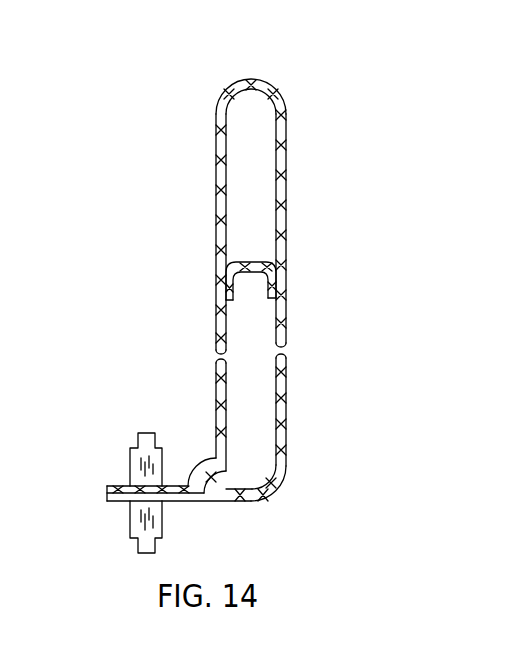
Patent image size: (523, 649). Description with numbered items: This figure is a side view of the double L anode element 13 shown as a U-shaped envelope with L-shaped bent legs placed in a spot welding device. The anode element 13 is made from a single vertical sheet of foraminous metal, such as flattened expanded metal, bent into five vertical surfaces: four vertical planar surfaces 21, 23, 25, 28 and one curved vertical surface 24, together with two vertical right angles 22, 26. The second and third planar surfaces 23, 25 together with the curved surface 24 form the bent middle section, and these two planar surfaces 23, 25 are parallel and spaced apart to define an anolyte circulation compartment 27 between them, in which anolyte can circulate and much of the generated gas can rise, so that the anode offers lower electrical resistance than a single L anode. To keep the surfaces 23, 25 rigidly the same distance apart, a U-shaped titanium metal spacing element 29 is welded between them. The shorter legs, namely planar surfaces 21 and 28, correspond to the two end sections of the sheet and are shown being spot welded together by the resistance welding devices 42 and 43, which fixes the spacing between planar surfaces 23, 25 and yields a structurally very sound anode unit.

The double L anode element 13 is at (234, 52).
The first vertical planar surface 21 is at (118, 507).
The vertical right angle 22 is at (273, 494).
The second vertical planar surface 23 is at (287, 392).
The curved vertical surface 24 is at (250, 79).
The third vertical planar surface 25 is at (217, 183).
The vertical right angle 26 is at (212, 470).
The anolyte circulation compartment 27 is at (252, 337).
The fourth vertical planar surface 28 is at (118, 487).
The U-shaped titanium metal spacing element 29 is at (252, 262).
The resistance welding device 42 is at (130, 455).
The resistance welding device 43 is at (163, 533).